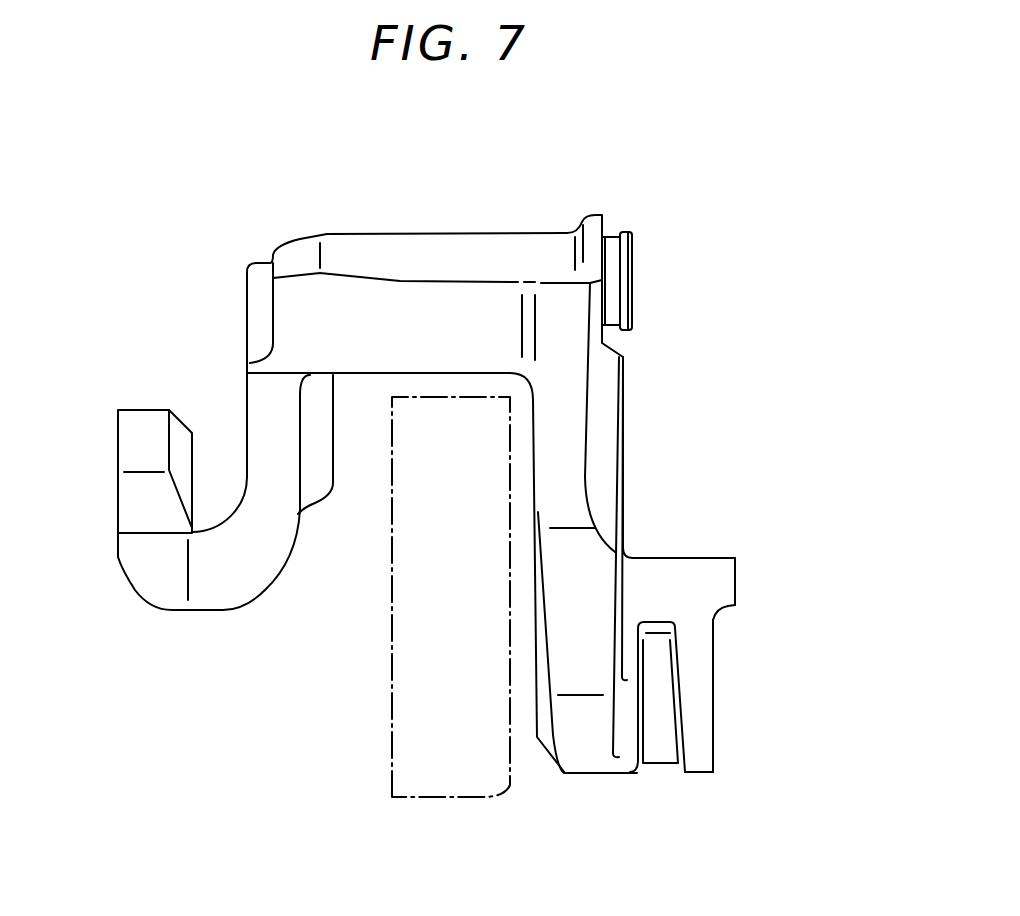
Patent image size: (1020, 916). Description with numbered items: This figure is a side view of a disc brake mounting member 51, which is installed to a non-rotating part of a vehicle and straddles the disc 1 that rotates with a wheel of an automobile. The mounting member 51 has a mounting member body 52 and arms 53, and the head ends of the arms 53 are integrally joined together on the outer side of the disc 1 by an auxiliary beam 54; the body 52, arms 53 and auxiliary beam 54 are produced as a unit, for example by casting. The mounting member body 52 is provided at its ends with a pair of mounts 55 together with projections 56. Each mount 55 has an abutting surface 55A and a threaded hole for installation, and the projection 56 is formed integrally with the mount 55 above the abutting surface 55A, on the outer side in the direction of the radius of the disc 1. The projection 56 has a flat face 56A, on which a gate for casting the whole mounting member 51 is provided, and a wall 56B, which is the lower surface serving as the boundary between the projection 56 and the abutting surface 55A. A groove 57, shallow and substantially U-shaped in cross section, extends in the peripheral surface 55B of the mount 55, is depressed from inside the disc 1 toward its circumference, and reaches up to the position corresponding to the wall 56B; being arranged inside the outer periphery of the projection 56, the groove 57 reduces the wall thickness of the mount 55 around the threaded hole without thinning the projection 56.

The disc 1 is at (393, 735).
The disc brake mounting member 51 is at (591, 214).
The mounting member body 52 is at (580, 755).
The arms 53 is at (393, 235).
The auxiliary beam 54 is at (135, 445).
The mounts 55 is at (759, 733).
The abutting surfaces 55A is at (715, 682).
The peripheral surfaces 55B is at (714, 748).
The projections 56 is at (731, 539).
The flat faces 56A is at (737, 568).
The walls 56B is at (728, 610).
The grooves 57 is at (642, 735).